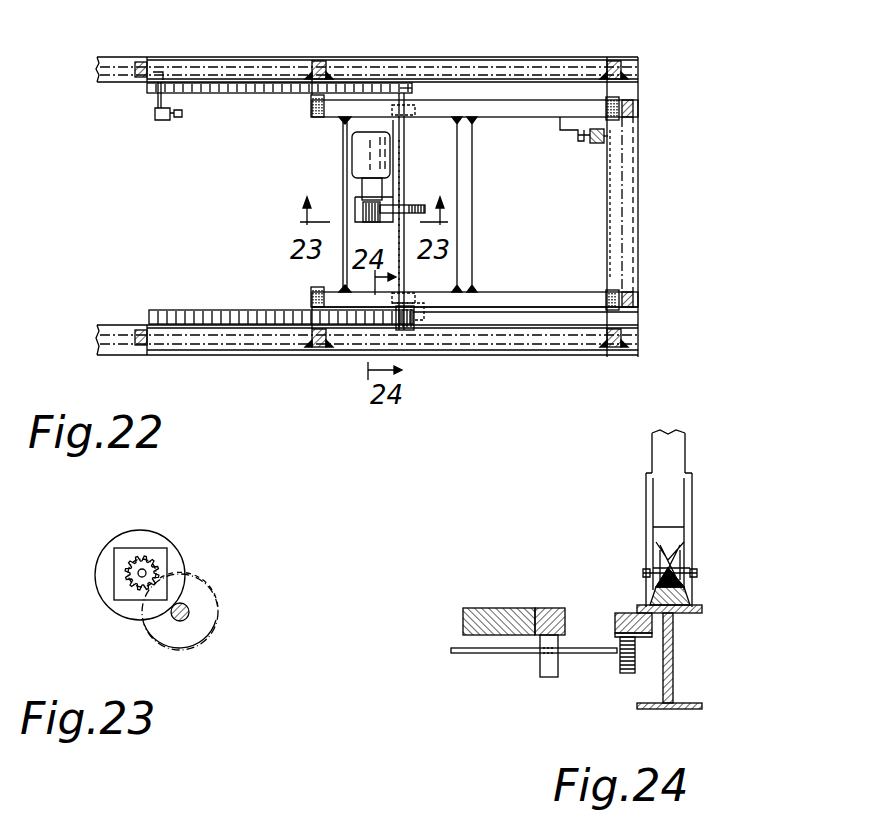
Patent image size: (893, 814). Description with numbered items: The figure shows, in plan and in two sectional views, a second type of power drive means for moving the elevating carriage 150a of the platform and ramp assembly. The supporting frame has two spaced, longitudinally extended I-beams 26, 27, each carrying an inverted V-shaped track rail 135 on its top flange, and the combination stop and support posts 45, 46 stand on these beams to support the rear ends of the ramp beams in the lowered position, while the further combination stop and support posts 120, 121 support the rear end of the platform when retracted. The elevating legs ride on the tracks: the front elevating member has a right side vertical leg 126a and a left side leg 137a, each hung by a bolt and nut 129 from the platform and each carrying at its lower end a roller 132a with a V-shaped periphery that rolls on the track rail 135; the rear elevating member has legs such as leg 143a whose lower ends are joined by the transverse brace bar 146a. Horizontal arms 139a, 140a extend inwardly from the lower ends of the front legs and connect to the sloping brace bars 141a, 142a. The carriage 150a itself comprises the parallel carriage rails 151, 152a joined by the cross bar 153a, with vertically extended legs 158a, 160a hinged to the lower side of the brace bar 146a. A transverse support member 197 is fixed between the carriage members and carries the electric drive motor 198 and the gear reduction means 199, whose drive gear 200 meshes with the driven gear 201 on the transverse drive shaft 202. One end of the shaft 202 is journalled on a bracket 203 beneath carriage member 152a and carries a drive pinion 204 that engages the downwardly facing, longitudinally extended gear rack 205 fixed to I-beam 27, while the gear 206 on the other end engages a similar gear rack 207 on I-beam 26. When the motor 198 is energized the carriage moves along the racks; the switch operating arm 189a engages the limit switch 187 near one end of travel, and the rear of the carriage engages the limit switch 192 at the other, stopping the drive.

In FIG. 22, the support frame I-beam 26 is at (110, 57).
In FIG. 22, the support frame I-beam 27 is at (118, 350).
In FIG. 24, the support frame I-beam 27 is at (673, 655).
In FIG. 22, the combination stop and support post 45 is at (142, 62).
In FIG. 22, the combination stop and support post 46 is at (142, 328).
In FIG. 22, the combination stop and support post 120 is at (636, 108).
In FIG. 22, the combination stop and support post 121 is at (636, 297).
In FIG. 22, the right side vertical leg 126a is at (316, 348).
In FIG. 22, the nut 129 is at (640, 220).
In FIG. 22, the roller 132a is at (622, 62).
In FIG. 24, the roller 132a is at (681, 562).
In FIG. 22, the track rail 135 is at (218, 59).
In FIG. 24, the track rail 135 is at (686, 598).
In FIG. 22, the left side leg 137a is at (317, 61).
In FIG. 22, the horizontal arm 139a is at (308, 330).
In FIG. 22, the horizontal arm 140a is at (311, 96).
In FIG. 22, the brace bar 141a is at (310, 297).
In FIG. 22, the brace bar 142a is at (315, 118).
In FIG. 24, the leg 143a is at (660, 460).
In FIG. 22, the transverse brace bar 146a is at (611, 211).
In FIG. 22, the elevating carriage 150a is at (498, 100).
In FIG. 22, the carriage rail 151 is at (522, 110).
In FIG. 22, the carriage rail 152a is at (528, 293).
In FIG. 24, the carriage rail 152a is at (551, 609).
In FIG. 22, the cross bar 153a is at (473, 216).
In FIG. 22, the vertically extended leg 158a is at (592, 302).
In FIG. 22, the vertically extended leg 160a is at (604, 101).
In FIG. 22, the limit switch 187 is at (597, 145).
In FIG. 22, the switch operating arm 189a is at (578, 138).
In FIG. 22, the limit switch 192 is at (156, 116).
In FIG. 22, the transverse support member 197 is at (353, 276).
In FIG. 24, the transverse support member 197 is at (493, 613).
In FIG. 22, the electric drive motor 198 is at (357, 155).
In FIG. 23, the electric drive motor 198 is at (100, 557).
In FIG. 22, the gear reduction means 199 is at (367, 190).
In FIG. 23, the gear reduction means 199 is at (118, 590).
In FIG. 22, the drive gear 200 is at (369, 225).
In FIG. 23, the drive gear 200 is at (146, 566).
In FIG. 22, the driven gear 201 is at (415, 207).
In FIG. 23, the driven gear 201 is at (198, 595).
In FIG. 22, the transverse drive shaft 202 is at (406, 176).
In FIG. 23, the transverse drive shaft 202 is at (189, 615).
In FIG. 24, the transverse drive shaft 202 is at (471, 655).
In FIG. 22, the bracket 203 is at (409, 118).
In FIG. 24, the bracket 203 is at (549, 670).
In FIG. 22, the drive pinion 204 is at (426, 319).
In FIG. 24, the drive pinion 204 is at (619, 672).
In FIG. 22, the gear rack 205 is at (195, 312).
In FIG. 24, the gear rack 205 is at (626, 614).
In FIG. 22, the gear 206 is at (420, 92).
In FIG. 22, the gear rack 207 is at (270, 95).